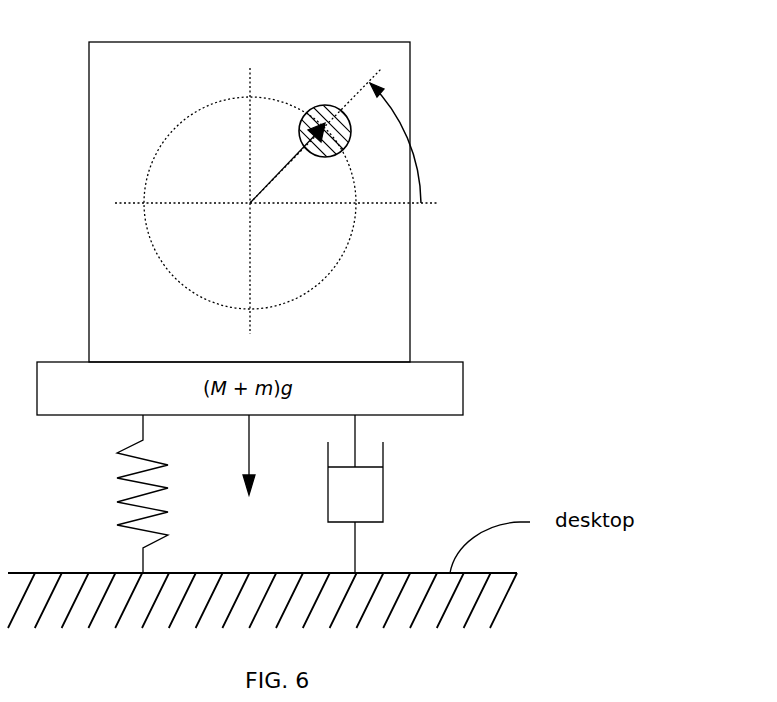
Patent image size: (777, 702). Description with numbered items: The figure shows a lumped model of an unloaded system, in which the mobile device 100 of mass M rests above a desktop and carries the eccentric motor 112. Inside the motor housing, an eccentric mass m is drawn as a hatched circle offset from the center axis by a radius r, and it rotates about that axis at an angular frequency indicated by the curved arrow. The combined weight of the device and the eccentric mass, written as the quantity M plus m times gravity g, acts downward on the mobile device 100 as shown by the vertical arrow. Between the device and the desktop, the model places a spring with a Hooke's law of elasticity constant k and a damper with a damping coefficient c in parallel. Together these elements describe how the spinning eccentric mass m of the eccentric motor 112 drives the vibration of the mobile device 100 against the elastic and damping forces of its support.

The eccentric motor 112 is at (148, 78).
The mobile device 100 is at (108, 398).
The mass of the eccentric motor m is at (325, 105).
The radius r is at (287, 163).
The Hooke's law of elasticity constant k is at (125, 494).
The damping coefficient c is at (370, 494).